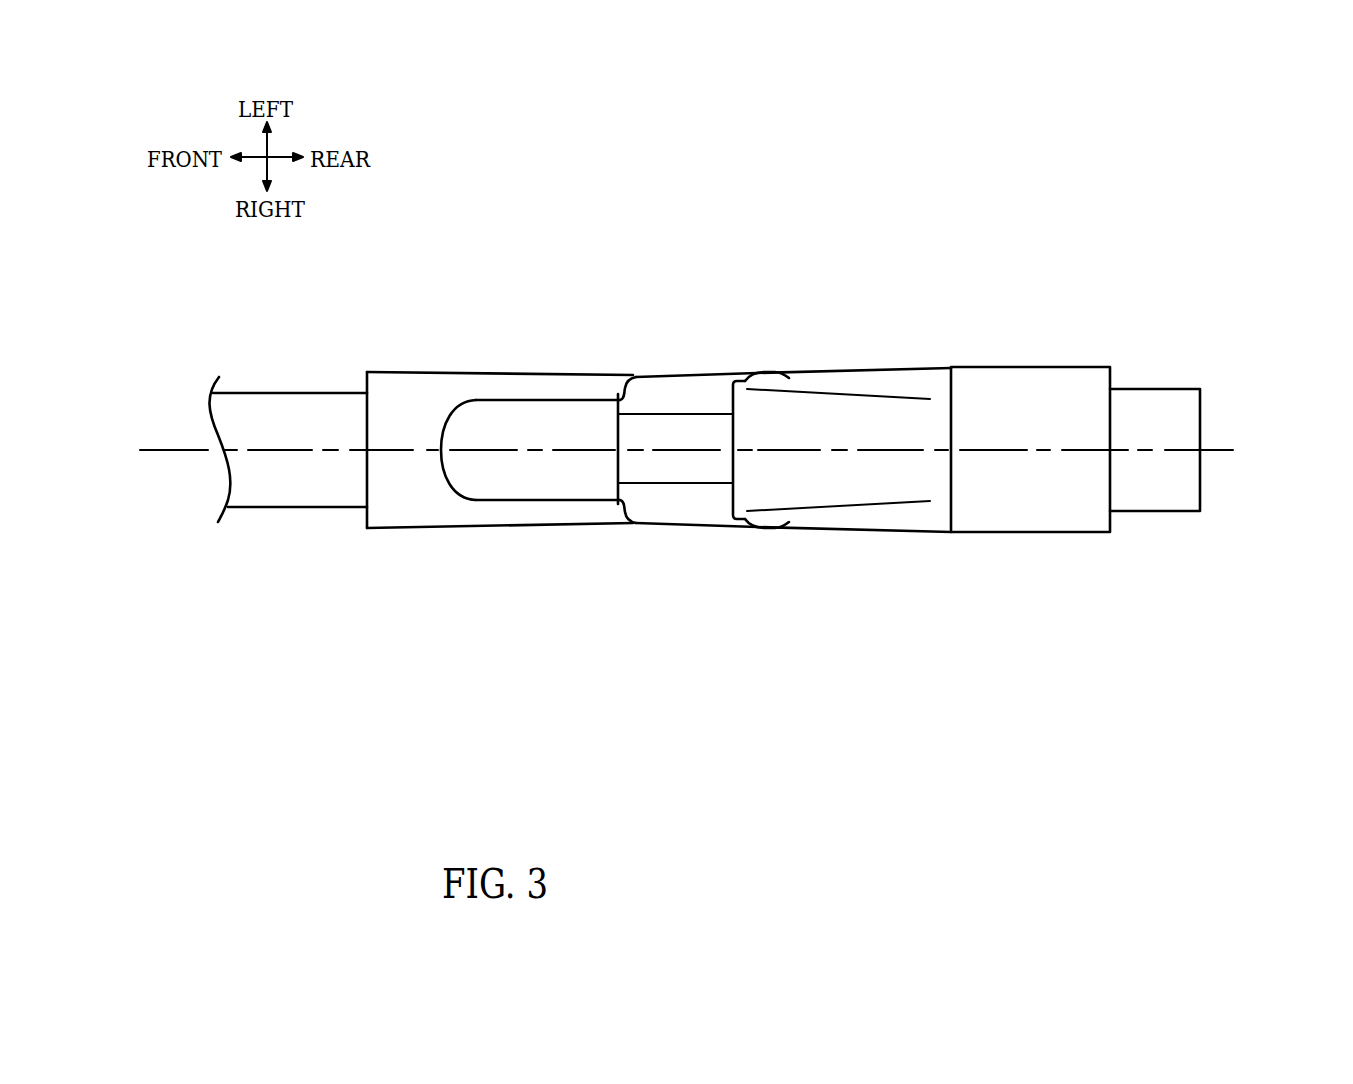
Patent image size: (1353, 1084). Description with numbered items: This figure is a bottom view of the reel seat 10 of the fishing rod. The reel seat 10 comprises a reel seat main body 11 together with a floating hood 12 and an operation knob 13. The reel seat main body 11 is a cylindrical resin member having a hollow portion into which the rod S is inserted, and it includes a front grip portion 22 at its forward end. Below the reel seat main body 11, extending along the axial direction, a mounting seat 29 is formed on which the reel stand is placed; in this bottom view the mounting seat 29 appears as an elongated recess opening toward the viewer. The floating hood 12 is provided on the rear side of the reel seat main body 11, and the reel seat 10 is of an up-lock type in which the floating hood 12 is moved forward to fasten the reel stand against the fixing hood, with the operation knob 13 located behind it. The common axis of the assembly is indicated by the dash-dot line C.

The reel seat 10 is at (607, 323).
The reel seat main body 11 is at (531, 418).
The front grip portion 22 is at (531, 418).
The mounting seat 29 is at (677, 433).
The floating hood 12 is at (876, 402).
The operation knob 13 is at (1037, 400).
The rod S is at (265, 405).
The central axis C is at (701, 450).